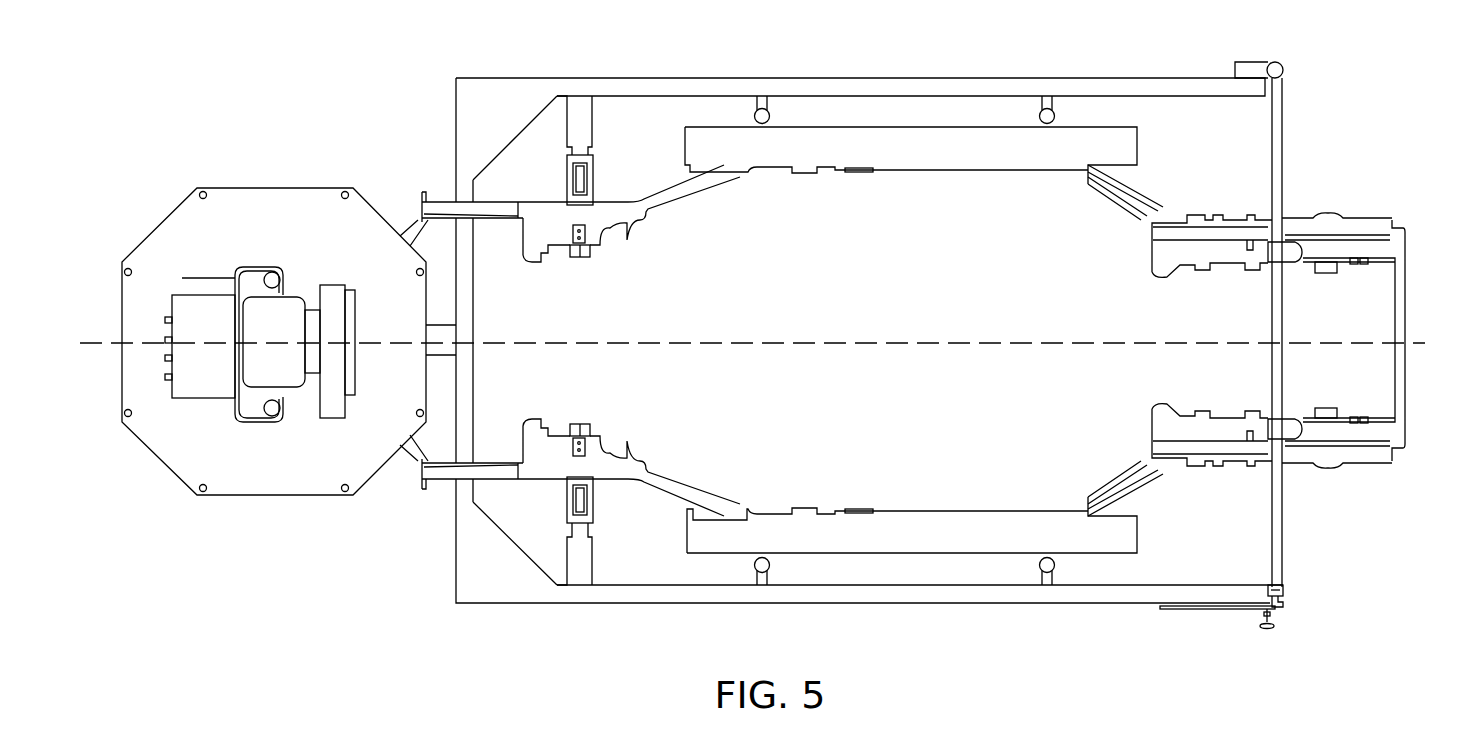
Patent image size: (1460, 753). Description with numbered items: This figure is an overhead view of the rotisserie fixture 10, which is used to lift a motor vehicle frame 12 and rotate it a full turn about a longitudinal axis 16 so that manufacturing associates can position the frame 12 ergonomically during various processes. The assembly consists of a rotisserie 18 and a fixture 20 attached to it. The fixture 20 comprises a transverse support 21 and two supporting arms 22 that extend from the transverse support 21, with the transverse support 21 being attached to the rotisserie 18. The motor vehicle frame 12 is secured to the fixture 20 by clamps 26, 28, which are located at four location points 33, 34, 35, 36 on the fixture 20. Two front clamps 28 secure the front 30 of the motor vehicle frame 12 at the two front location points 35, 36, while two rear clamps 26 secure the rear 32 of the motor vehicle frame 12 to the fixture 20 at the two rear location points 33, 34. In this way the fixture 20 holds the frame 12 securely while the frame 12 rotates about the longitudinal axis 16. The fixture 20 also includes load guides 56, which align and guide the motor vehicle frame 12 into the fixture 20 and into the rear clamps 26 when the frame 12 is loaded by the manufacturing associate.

The rotisserie fixture 10 is at (206, 90).
The frame 12 is at (878, 540).
The longitudinal axis 16 is at (1412, 328).
The rotisserie 18 is at (283, 480).
The fixture 20 is at (1163, 88).
The transverse support 21 is at (463, 183).
The supporting arms 22 is at (497, 88).
The rear clamps 26 is at (578, 188).
The front clamps 28 is at (1284, 250).
The front of the motor vehicle frame 30 is at (1205, 460).
The rear of the motor vehicle frame 32 is at (625, 480).
The rear location point 33 is at (600, 160).
The rear location point 34 is at (563, 518).
The front location point 35 is at (1293, 208).
The front location point 36 is at (1289, 478).
The load guides 56 is at (762, 98).